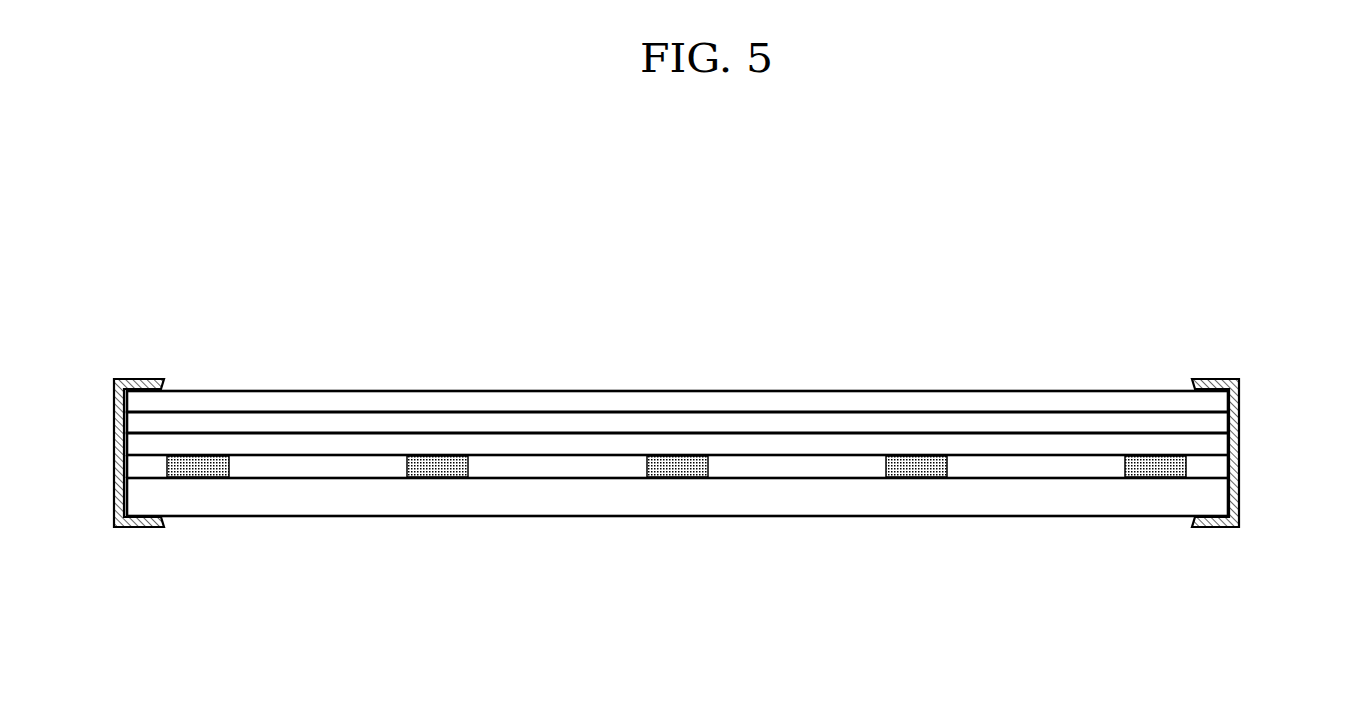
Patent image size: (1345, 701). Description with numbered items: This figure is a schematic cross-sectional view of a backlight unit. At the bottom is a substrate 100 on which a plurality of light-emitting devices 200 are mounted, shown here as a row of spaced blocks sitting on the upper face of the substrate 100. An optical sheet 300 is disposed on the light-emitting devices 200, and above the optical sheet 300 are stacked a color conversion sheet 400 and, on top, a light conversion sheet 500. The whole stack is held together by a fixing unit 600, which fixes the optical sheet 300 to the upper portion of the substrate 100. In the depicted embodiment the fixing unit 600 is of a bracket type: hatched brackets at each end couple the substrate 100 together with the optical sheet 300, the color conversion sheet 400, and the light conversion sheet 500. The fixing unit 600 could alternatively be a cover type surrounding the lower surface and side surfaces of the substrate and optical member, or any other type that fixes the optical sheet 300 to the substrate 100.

The substrate 100 is at (1215, 497).
The light-emitting devices 200 is at (1153, 476).
The optical sheet 300 is at (1220, 445).
The color conversion sheet 400 is at (1218, 422).
The light conversion sheet 500 is at (1215, 405).
The fixing unit 600 is at (133, 527).